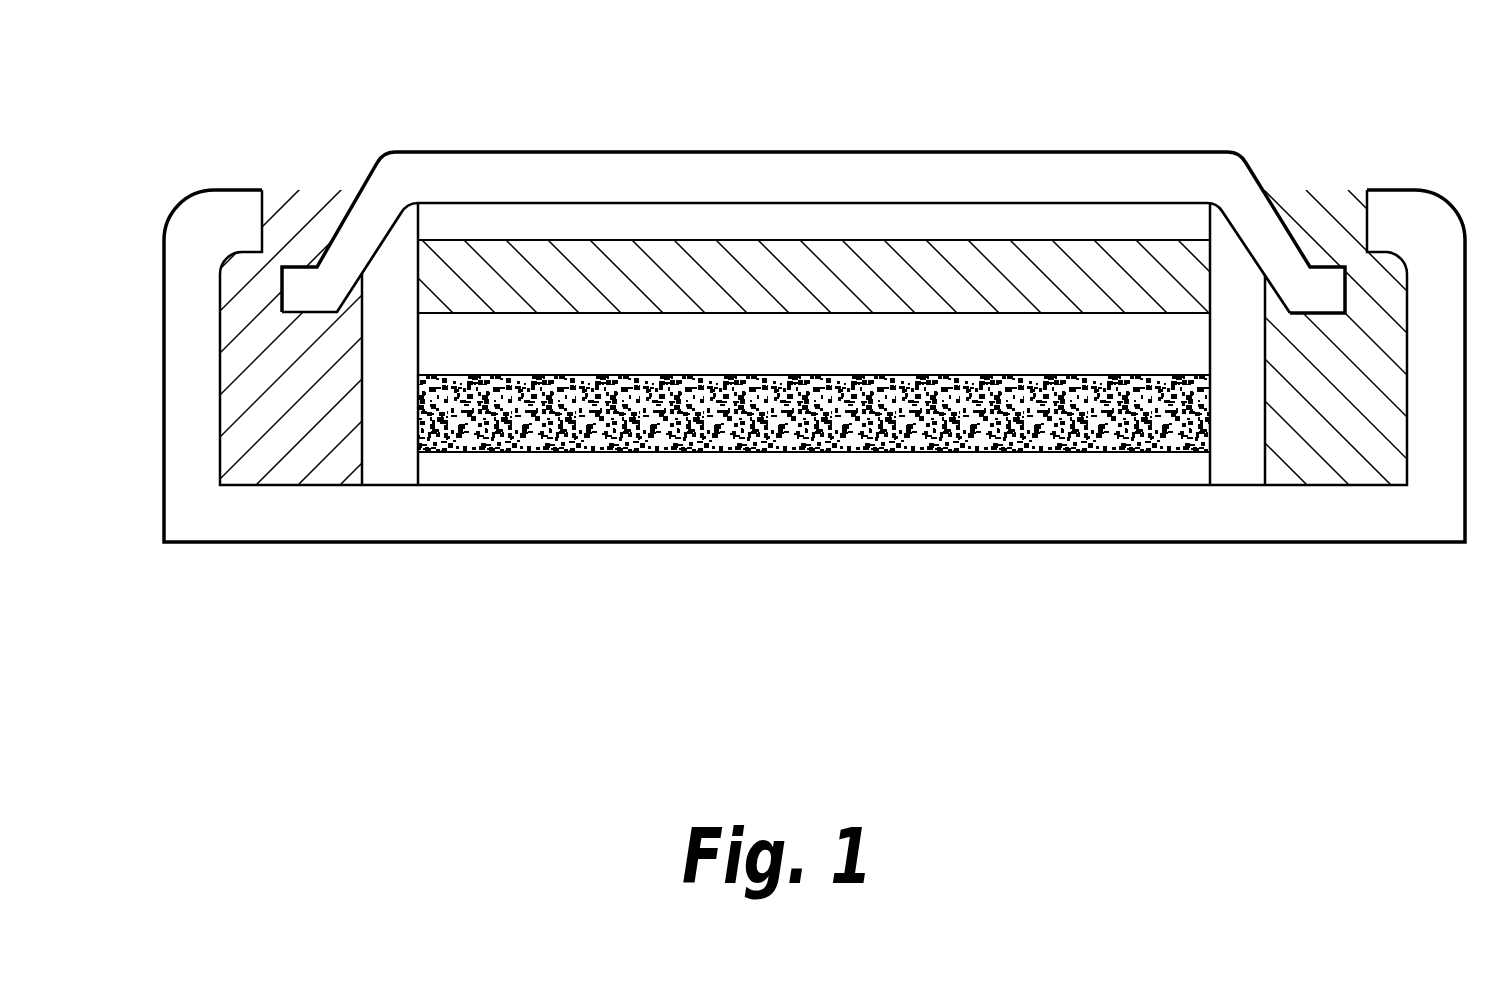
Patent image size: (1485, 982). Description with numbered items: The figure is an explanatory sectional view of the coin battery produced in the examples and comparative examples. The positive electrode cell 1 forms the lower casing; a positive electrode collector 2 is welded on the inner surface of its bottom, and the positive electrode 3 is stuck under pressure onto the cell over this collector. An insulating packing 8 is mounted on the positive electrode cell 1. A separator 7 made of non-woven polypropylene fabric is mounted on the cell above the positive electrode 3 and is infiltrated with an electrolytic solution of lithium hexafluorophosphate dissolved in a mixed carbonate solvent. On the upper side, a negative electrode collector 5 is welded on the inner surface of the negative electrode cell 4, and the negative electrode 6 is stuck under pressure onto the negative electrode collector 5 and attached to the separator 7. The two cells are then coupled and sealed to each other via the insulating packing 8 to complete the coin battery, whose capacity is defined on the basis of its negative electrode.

The positive electrode cell 1 is at (512, 527).
The positive electrode collector 2 is at (682, 472).
The positive electrode 3 is at (923, 442).
The negative electrode cell 4 is at (635, 163).
The negative electrode collector 5 is at (915, 217).
The negative electrode 6 is at (1127, 260).
The separator 7 is at (1068, 350).
The insulating packing 8 is at (308, 208).